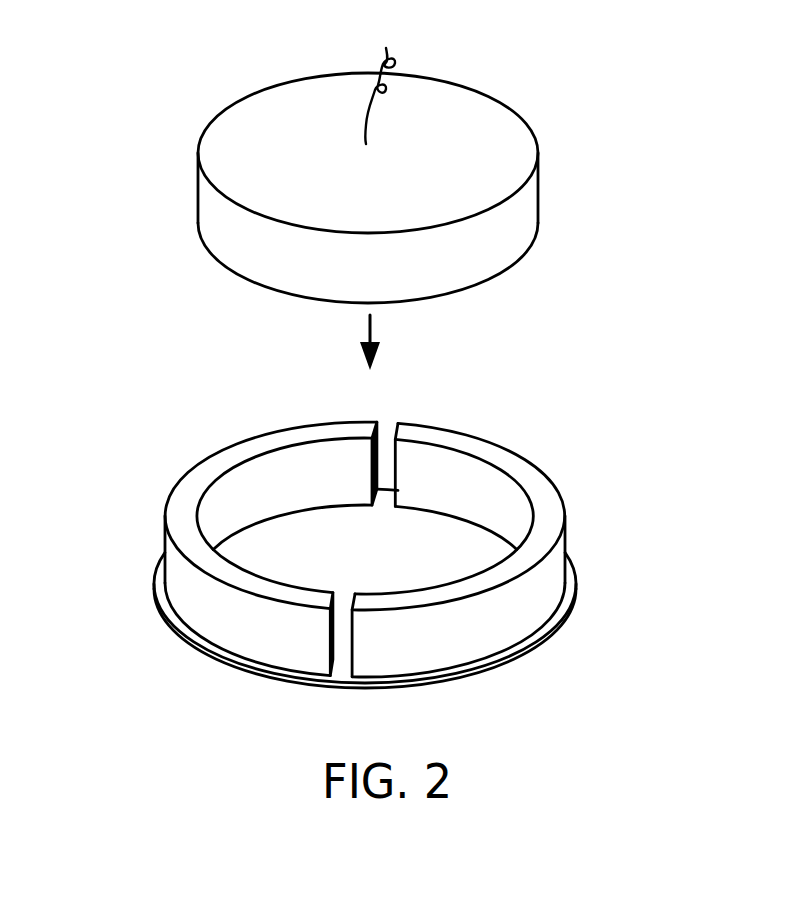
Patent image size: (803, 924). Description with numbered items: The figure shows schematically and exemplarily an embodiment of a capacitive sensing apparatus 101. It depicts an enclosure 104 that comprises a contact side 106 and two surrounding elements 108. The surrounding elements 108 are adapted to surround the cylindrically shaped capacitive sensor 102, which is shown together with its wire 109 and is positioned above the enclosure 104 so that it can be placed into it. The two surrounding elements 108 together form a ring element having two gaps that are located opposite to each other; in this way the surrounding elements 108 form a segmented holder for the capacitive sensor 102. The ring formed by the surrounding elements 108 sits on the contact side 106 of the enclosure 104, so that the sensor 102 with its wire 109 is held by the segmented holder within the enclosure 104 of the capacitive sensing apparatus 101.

The assembly 101 is at (144, 345).
The capacitive sensor 102 is at (601, 170).
The enclosure 104 is at (602, 449).
The contact side 106 is at (576, 597).
The surrounding elements 108 is at (567, 542).
The wire 109 is at (385, 50).